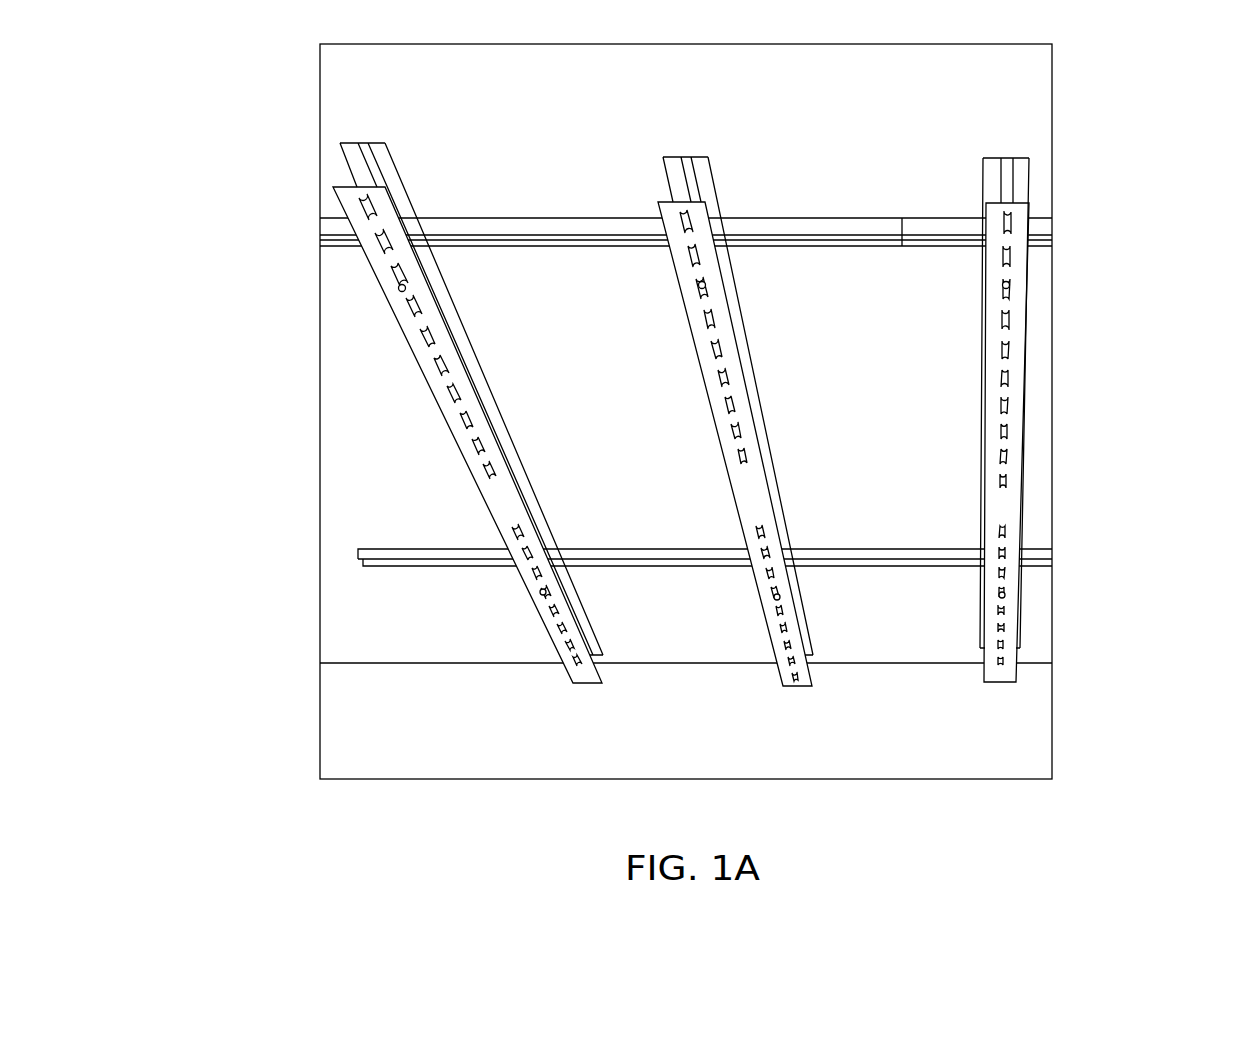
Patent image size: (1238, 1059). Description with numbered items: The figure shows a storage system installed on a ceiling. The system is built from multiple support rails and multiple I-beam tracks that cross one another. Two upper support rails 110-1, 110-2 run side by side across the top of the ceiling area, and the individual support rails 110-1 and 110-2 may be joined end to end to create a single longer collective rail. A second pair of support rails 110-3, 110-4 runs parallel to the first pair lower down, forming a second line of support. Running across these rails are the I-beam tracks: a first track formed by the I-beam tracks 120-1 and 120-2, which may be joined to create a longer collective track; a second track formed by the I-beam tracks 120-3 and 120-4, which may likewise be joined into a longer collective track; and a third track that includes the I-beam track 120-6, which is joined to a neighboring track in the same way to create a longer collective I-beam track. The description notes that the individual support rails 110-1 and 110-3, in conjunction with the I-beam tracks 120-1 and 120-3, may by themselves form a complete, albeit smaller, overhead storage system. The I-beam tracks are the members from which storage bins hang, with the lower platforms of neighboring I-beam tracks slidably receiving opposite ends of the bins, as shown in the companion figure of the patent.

The support rail 110-1 is at (517, 218).
The support rail 110-2 is at (945, 218).
The support rail 110-3 is at (432, 549).
The support rail 110-4 is at (958, 540).
The I-beam track 120-1 is at (388, 250).
The I-beam track 120-2 is at (540, 620).
The I-beam track 120-3 is at (690, 180).
The I-beam track 120-4 is at (772, 648).
The I-beam track 120-6 is at (1013, 620).